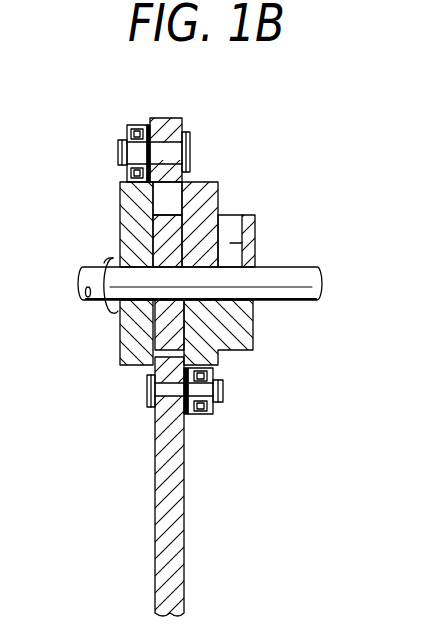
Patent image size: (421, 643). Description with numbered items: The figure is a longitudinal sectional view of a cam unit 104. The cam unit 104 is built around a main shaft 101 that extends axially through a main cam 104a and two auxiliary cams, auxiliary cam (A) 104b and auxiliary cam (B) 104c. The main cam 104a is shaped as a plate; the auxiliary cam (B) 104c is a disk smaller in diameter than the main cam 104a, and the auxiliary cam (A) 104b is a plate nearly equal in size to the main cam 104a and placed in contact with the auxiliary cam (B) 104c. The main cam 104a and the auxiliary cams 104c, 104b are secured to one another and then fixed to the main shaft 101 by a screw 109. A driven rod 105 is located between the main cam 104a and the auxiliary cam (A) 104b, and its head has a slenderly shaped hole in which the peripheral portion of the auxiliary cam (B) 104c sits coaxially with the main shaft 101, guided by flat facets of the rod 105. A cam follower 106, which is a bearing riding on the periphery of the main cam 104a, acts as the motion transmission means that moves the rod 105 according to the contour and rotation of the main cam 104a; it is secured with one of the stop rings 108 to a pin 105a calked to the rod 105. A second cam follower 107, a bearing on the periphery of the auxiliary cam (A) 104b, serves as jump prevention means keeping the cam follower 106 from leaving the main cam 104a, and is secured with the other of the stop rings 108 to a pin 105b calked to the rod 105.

The main shaft 101 is at (303, 270).
The cam unit 104 is at (253, 333).
The main cam 104a is at (127, 193).
The auxiliary cam (A) 104b is at (222, 188).
The auxiliary cam (B) 104c is at (155, 232).
The driven rod 105 is at (186, 490).
The pin 105a is at (190, 142).
The pin 105b is at (150, 396).
The cam follower 106 is at (131, 124).
The cam follower 107 is at (200, 414).
The stop rings 108 is at (118, 141).
The screw 109 is at (252, 240).